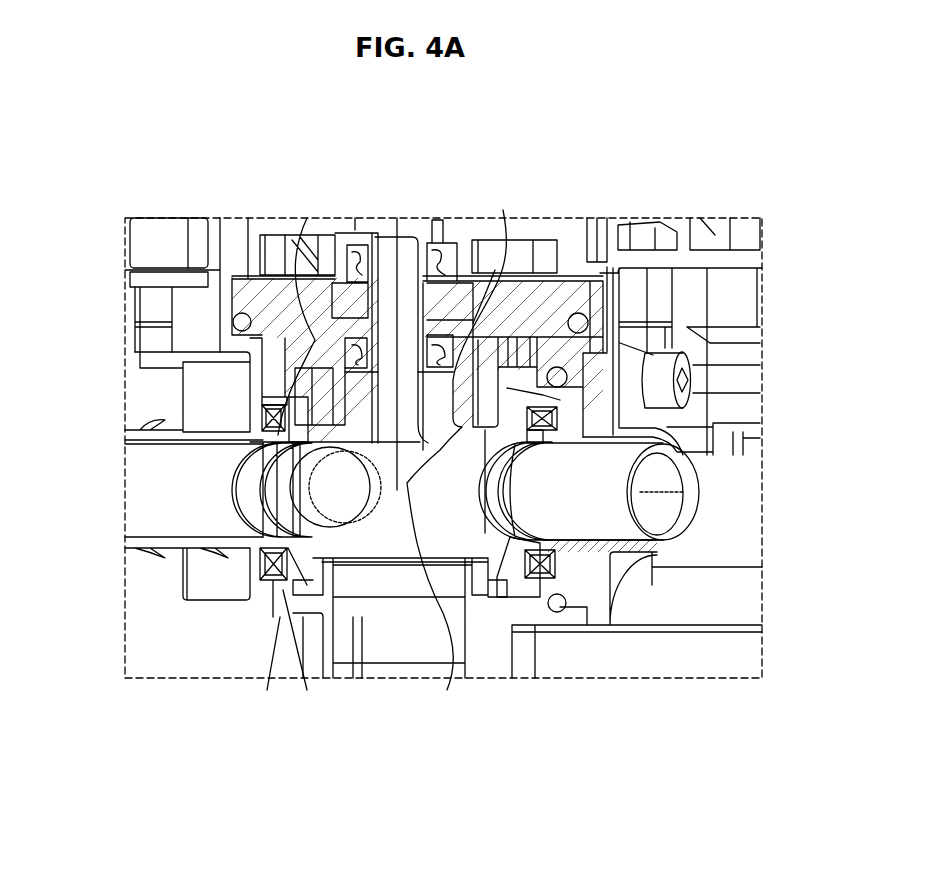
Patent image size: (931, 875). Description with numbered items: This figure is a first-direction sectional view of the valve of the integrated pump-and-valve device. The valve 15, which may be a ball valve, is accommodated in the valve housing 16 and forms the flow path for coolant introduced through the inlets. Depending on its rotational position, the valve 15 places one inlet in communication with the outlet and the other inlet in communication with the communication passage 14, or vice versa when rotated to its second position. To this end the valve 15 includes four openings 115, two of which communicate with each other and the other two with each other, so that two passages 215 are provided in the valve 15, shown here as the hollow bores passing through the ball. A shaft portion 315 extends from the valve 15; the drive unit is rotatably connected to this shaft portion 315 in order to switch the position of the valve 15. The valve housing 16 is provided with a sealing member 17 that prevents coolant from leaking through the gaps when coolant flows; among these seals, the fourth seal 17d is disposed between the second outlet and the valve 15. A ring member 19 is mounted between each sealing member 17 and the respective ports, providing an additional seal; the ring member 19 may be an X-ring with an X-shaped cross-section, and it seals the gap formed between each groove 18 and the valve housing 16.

The communication passage 14 is at (393, 625).
The valve 15 is at (500, 235).
The valve housing 16 is at (263, 297).
The sealing member 17 is at (306, 300).
The fourth seal 17d is at (295, 640).
The groove 18 is at (556, 566).
The ring member 19 is at (262, 412).
The openings 115 is at (310, 490).
The passages 215 is at (282, 610).
The shaft portion 315 is at (408, 258).